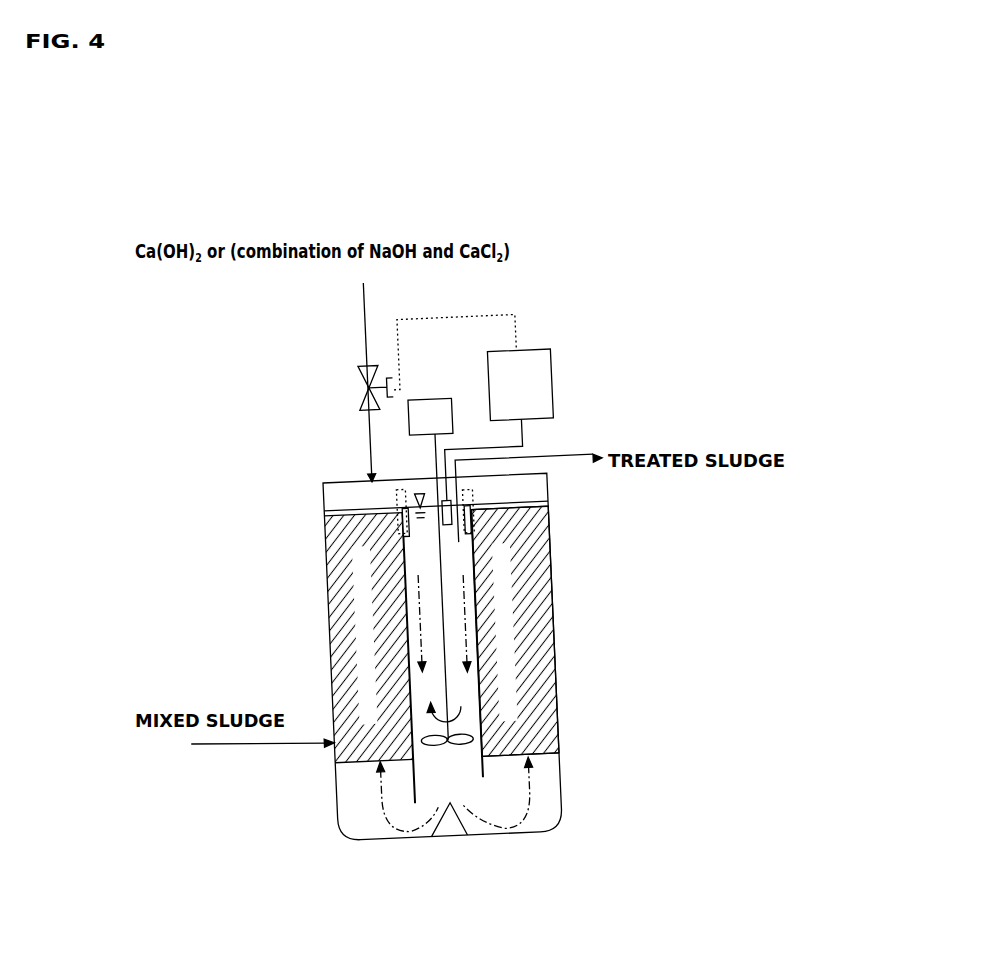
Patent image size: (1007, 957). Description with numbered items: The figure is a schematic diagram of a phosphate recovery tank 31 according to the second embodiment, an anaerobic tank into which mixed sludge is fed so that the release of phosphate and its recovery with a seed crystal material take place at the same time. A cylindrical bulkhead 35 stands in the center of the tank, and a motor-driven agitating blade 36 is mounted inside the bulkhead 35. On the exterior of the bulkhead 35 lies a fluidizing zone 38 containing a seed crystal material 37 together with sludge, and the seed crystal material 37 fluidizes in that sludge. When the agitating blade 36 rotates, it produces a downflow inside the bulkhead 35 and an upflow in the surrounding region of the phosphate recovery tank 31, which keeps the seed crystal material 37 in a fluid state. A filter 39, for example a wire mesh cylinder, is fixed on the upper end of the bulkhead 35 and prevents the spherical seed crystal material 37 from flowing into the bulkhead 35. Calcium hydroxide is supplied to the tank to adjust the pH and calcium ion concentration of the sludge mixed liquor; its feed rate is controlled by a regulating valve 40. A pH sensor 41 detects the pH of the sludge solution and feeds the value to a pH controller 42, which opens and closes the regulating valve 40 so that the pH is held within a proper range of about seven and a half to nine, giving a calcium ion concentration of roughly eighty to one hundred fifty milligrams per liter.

The phosphate recovery tank 31 is at (314, 613).
The bulkhead 35 is at (470, 784).
The agitating blade 36 is at (450, 751).
The seed crystal material 37 is at (511, 620).
The fluidizing zone 38 is at (535, 714).
The filter 39 is at (397, 511).
The regulating valve 40 is at (372, 390).
The pH sensor 41 is at (462, 511).
The pH controller 42 is at (525, 384).